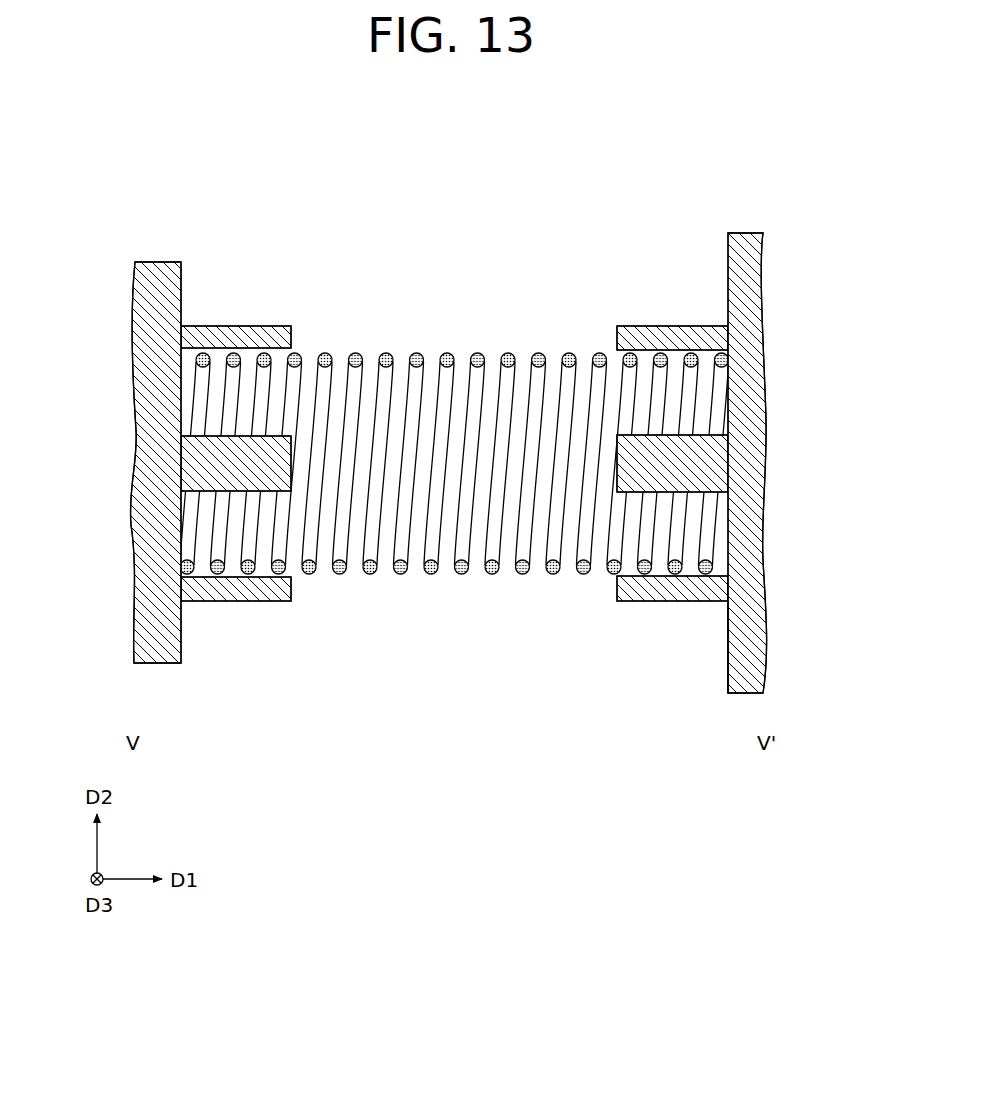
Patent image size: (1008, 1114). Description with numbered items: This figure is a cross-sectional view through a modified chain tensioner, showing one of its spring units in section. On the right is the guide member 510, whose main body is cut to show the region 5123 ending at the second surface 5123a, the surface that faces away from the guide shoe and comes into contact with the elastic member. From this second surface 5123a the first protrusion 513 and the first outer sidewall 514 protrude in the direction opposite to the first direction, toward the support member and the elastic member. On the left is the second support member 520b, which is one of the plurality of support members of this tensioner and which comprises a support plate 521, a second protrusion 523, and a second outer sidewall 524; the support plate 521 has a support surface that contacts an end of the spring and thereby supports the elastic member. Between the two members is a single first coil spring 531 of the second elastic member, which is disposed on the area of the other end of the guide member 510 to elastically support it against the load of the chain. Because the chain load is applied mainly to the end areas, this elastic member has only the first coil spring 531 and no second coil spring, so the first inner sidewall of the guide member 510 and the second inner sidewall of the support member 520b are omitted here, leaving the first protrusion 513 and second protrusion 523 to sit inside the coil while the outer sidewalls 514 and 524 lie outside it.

The guide member 510 is at (742, 450).
The second surface portion of main body 5123 is at (747, 293).
The second surface 5123a is at (728, 635).
The first outer sidewall 514 is at (713, 338).
The first protrusion 513 is at (710, 468).
The second support member 520b is at (183, 488).
The support plate 521 is at (147, 292).
The second outer sidewall 524 is at (192, 340).
The second protrusion 523 is at (197, 463).
The first coil spring 531 is at (462, 575).